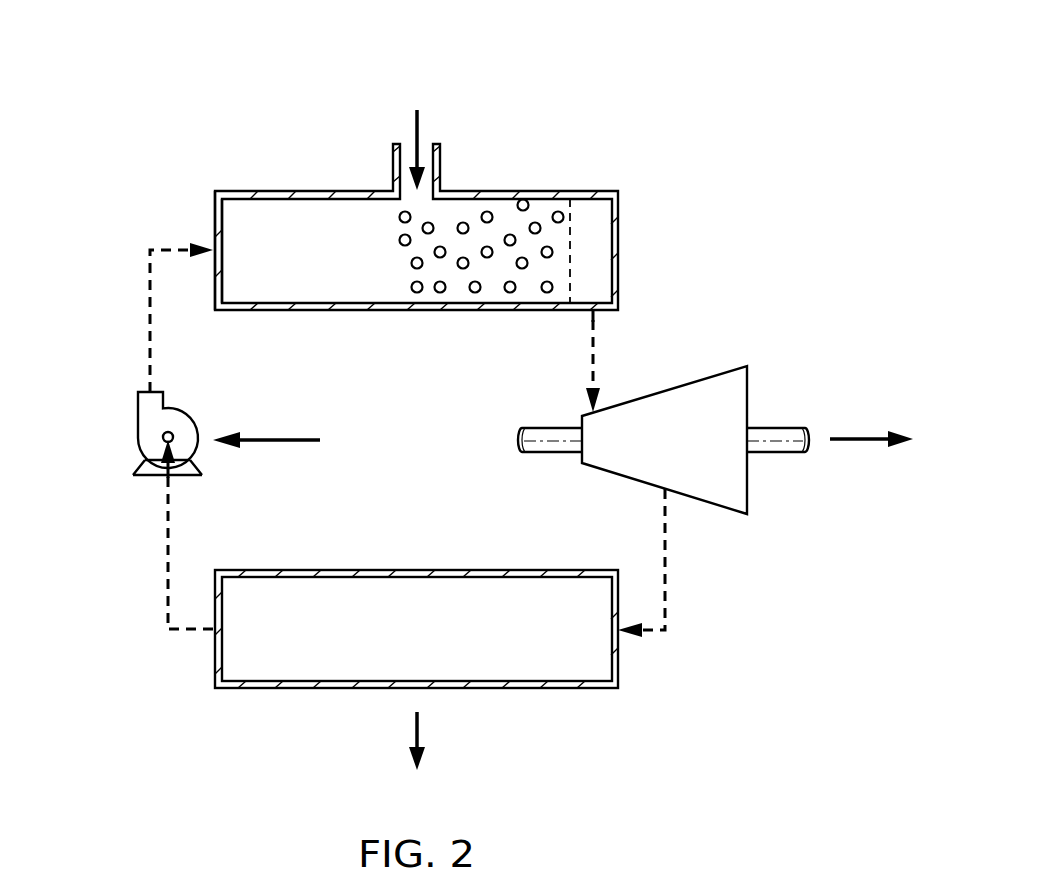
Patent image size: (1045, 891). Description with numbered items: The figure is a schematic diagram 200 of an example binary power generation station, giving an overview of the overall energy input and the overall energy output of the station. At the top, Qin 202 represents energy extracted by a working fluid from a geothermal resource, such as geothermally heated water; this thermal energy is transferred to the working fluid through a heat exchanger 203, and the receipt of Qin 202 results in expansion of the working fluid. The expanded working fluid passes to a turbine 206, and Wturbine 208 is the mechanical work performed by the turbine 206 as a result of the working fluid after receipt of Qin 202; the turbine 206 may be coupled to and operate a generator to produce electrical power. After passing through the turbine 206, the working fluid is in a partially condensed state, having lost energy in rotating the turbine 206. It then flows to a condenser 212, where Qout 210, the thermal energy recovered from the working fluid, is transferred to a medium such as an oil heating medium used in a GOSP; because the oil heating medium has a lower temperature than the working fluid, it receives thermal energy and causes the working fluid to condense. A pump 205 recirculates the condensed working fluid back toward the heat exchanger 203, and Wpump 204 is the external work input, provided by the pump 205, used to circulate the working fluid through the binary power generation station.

The schematic diagram 200 is at (308, 73).
The Qin 202 is at (420, 127).
The heat exchanger 203 is at (303, 191).
The Wpump 204 is at (275, 444).
The pump 205 is at (138, 415).
The turbine 206 is at (690, 381).
The Wturbine 208 is at (866, 444).
The Qout 210 is at (420, 736).
The condenser 212 is at (332, 689).